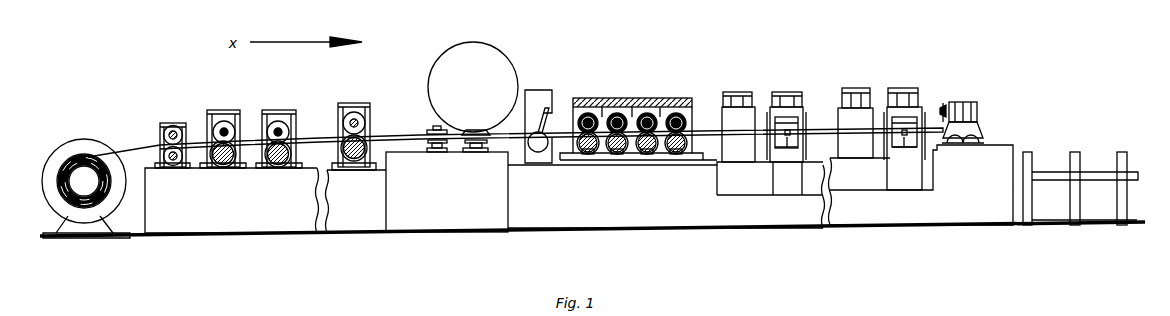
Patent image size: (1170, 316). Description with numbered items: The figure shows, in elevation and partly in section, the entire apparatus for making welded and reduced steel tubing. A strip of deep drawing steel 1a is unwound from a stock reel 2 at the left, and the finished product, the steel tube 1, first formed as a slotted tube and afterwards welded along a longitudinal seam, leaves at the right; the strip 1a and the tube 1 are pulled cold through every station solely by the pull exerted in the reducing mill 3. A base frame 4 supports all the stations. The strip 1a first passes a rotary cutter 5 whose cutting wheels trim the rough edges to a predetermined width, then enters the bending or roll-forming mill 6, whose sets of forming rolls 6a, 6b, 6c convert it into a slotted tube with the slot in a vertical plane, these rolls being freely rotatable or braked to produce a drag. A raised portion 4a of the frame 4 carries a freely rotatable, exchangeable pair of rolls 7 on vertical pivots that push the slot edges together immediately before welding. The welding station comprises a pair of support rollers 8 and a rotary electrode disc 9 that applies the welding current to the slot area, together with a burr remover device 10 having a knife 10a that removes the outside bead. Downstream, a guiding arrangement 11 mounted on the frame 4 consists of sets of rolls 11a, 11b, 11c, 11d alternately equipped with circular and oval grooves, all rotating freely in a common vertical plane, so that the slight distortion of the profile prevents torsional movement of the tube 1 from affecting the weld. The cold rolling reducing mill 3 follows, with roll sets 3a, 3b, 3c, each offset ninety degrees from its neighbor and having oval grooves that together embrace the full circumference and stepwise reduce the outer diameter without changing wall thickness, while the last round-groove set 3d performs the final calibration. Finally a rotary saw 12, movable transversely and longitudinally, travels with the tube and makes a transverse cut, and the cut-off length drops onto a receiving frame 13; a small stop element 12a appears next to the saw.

The tube 1 is at (702, 132).
The strip of deep drawing steel 1a is at (90, 157).
The stock reel 2 is at (52, 160).
The cold rolling reducing mill 3 is at (868, 177).
The set of rolls 3a is at (738, 91).
The set of rolls 3b is at (787, 91).
The set of rolls 3c is at (850, 88).
The calibrating round groove set of rolls 3d is at (900, 88).
The base frame 4 is at (697, 228).
The raised portion of the frame 4a is at (420, 212).
The rotary cutter 5 is at (167, 123).
The bending or roll-forming mill 6 is at (273, 207).
The set of forming rolls 6a is at (210, 110).
The set of forming rolls 6b is at (267, 109).
The set of forming rolls 6c is at (350, 104).
The pair of rolls 7 is at (428, 130).
The pair of support rollers 8 is at (477, 136).
The rotary electrode disc 9 is at (466, 60).
The burr remover device 10 is at (529, 92).
The knife 10a is at (548, 113).
The guiding arrangement 11 is at (638, 163).
The set of rolls 11a is at (590, 114).
The set of rolls 11b is at (619, 114).
The set of rolls 11c is at (649, 114).
The set of rolls 11d is at (678, 114).
The rotary saw 12 is at (968, 102).
The stop 12a is at (943, 105).
The receiving frame 13 is at (1055, 172).